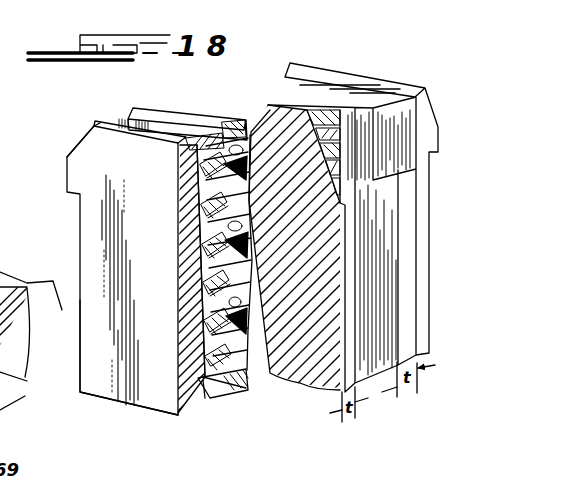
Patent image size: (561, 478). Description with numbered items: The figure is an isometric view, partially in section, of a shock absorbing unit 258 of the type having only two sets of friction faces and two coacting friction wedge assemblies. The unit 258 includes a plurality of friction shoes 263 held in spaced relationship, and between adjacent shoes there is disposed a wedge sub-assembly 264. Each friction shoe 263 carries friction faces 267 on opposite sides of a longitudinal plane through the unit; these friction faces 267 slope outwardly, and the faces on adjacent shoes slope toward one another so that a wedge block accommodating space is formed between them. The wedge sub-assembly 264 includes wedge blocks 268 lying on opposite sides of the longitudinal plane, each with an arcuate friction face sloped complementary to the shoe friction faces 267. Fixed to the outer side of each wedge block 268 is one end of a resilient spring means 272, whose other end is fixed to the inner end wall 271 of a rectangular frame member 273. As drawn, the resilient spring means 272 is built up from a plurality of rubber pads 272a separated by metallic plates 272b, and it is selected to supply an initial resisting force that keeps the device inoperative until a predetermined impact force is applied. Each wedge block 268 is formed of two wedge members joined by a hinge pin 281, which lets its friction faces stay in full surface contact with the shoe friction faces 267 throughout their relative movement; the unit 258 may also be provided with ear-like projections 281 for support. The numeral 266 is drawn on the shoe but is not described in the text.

The shock absorbing unit 258 is at (78, 130).
The friction shoe 263 is at (122, 128).
The wedge sub-assembly 264 is at (245, 82).
The block front face 266 is at (84, 369).
The friction face 267 is at (253, 137).
The wedge block 268 is at (213, 285).
The inner end wall 271 is at (242, 388).
The resilient spring means 272 is at (250, 193).
The rubber pad 272a is at (252, 172).
The metallic plate 272b is at (258, 197).
The rectangular frame member 273 is at (204, 392).
The hinge pin 281 is at (80, 177).